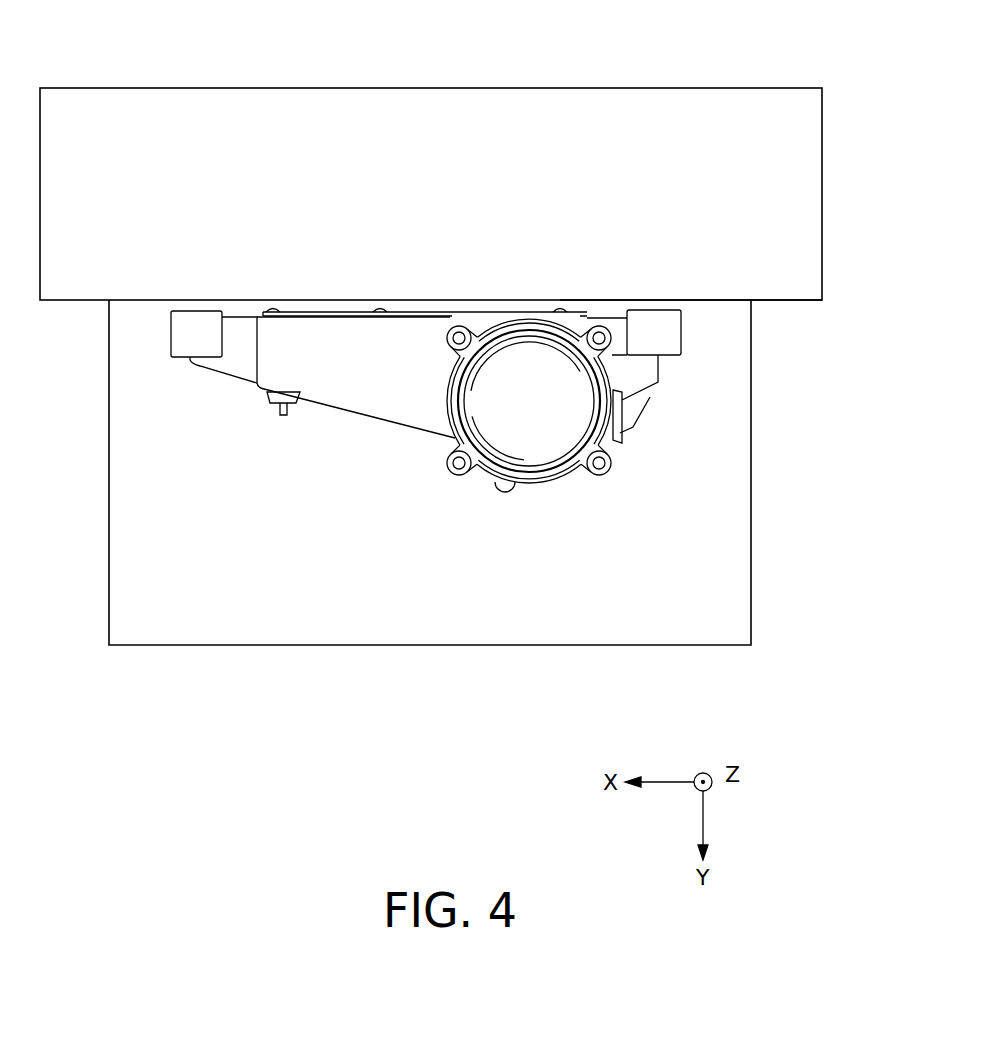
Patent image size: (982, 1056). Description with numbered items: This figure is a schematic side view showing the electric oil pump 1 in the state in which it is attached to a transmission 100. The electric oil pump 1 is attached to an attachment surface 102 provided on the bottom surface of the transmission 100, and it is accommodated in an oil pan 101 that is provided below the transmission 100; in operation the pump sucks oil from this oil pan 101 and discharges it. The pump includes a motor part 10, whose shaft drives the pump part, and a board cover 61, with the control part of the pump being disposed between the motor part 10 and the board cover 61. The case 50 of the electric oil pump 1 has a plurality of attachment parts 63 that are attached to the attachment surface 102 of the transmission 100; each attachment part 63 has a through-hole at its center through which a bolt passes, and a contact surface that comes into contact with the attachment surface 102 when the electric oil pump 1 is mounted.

The transmission 100 is at (675, 88).
The attachment surface 102 is at (592, 303).
The oil pan 101 is at (170, 645).
The electric oil pump 1 is at (438, 435).
The motor part 10 is at (529, 440).
The case 50 is at (650, 372).
The board cover 61 is at (347, 317).
The attachment parts 63 is at (176, 336).